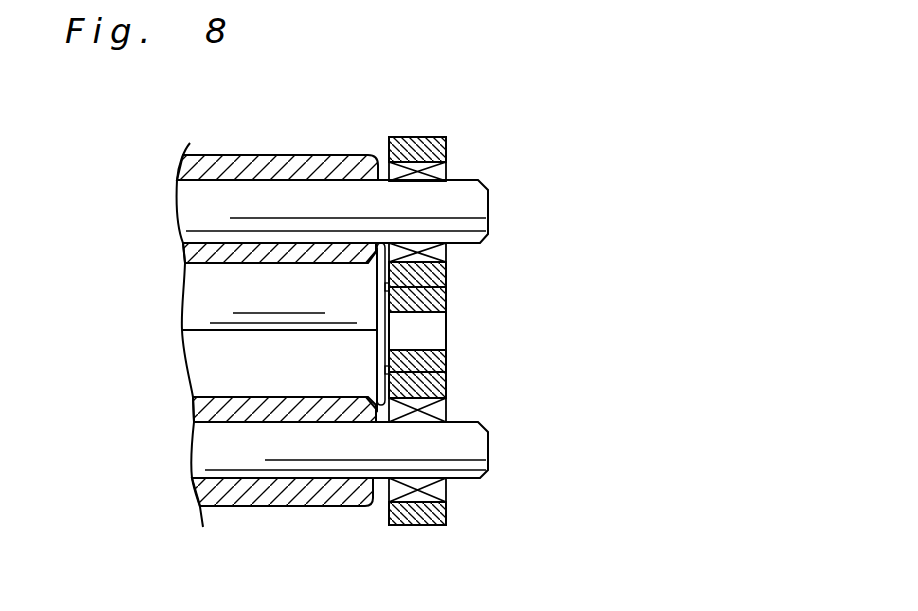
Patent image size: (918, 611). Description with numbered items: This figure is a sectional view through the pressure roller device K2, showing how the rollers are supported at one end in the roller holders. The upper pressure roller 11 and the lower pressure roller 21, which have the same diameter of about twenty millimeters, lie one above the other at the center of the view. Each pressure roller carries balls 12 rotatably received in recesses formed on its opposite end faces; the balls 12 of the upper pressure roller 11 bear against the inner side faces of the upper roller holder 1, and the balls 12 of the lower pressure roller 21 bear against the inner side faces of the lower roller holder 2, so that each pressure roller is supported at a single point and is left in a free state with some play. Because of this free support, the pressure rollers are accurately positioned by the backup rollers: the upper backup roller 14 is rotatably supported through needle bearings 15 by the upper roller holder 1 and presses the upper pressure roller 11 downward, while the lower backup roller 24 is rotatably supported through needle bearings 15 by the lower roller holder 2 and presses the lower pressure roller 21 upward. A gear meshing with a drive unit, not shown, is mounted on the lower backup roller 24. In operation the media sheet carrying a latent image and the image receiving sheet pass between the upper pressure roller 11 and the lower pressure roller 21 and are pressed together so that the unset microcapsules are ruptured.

The upper roller holder 1 is at (447, 137).
The lower roller holder 2 is at (448, 510).
The upper pressure roller 11 is at (363, 280).
The balls 12 is at (447, 282).
The upper backup roller 14 is at (282, 155).
The needle bearings 15 is at (447, 167).
The lower pressure roller 21 is at (360, 348).
The lower backup roller 24 is at (308, 503).
The pressure roller device K2 is at (583, 187).